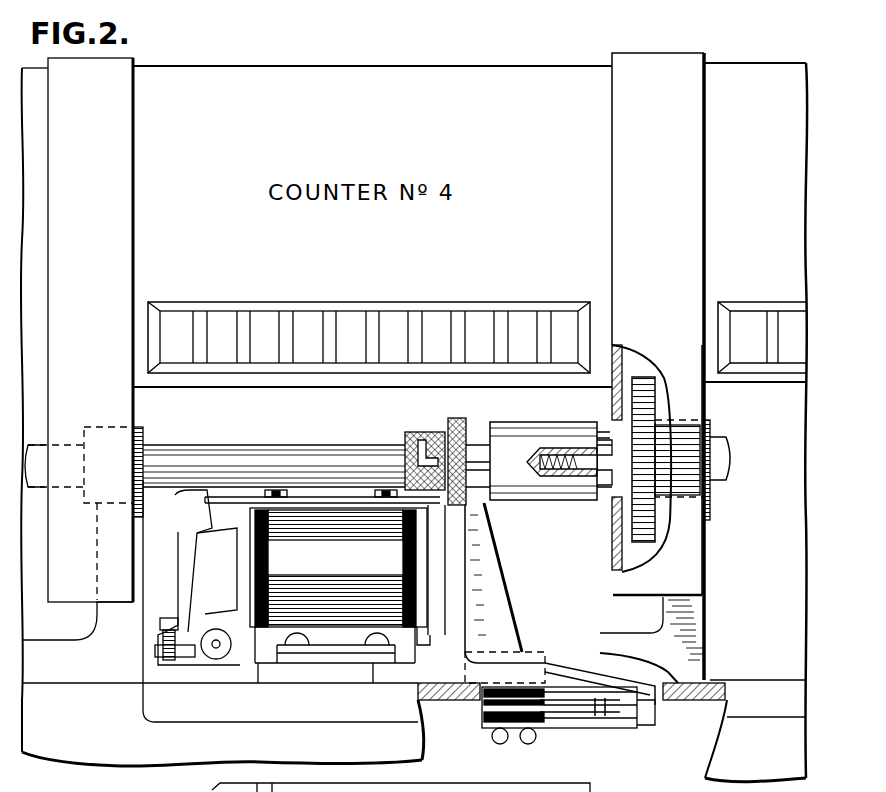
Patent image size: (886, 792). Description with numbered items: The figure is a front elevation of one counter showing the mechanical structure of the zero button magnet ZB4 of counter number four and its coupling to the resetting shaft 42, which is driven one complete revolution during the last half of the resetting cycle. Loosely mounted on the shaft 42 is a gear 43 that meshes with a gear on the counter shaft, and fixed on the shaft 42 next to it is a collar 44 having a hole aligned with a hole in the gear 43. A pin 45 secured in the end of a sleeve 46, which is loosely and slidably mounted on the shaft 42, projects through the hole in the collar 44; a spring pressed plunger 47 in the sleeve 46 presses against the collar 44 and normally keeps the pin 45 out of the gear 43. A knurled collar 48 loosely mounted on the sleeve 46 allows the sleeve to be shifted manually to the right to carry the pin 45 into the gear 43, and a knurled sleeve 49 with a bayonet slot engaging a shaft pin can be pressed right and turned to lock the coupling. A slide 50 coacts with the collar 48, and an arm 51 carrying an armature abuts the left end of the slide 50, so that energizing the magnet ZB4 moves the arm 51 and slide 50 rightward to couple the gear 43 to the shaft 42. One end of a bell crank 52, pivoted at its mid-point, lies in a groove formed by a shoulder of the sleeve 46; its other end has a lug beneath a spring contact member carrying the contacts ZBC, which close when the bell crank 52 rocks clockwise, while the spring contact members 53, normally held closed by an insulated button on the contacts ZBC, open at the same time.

The resetting shaft 42 is at (193, 450).
The gear 43 is at (648, 378).
The collar 44 is at (614, 505).
The pin 45 is at (606, 432).
The sleeve 46 is at (530, 487).
The spring pressed plunger 47 is at (600, 472).
The knurled collar 48 is at (458, 420).
The knurled sleeve 49 is at (425, 434).
The slide 50 is at (225, 497).
The arm 51 is at (187, 518).
The bell crank 52 is at (492, 578).
The spring contact members 53 is at (602, 700).
The zero button magnet ZB4 is at (302, 535).
The contacts ZBC is at (616, 720).